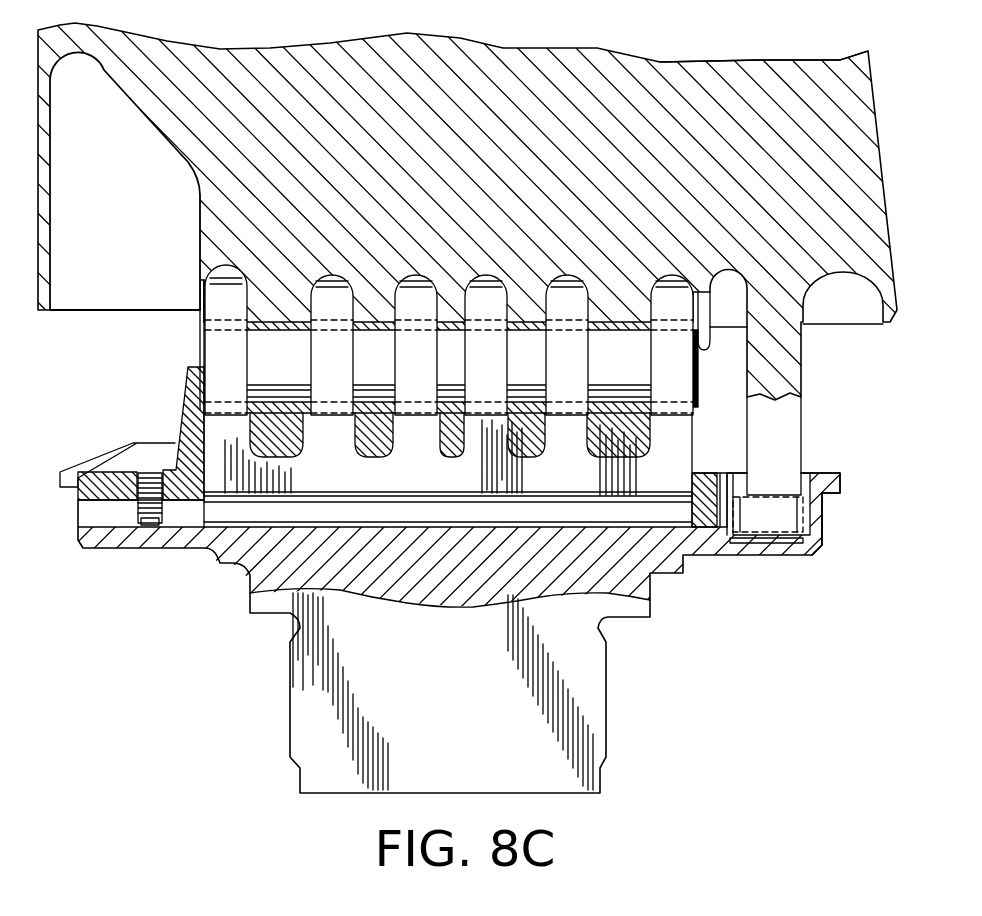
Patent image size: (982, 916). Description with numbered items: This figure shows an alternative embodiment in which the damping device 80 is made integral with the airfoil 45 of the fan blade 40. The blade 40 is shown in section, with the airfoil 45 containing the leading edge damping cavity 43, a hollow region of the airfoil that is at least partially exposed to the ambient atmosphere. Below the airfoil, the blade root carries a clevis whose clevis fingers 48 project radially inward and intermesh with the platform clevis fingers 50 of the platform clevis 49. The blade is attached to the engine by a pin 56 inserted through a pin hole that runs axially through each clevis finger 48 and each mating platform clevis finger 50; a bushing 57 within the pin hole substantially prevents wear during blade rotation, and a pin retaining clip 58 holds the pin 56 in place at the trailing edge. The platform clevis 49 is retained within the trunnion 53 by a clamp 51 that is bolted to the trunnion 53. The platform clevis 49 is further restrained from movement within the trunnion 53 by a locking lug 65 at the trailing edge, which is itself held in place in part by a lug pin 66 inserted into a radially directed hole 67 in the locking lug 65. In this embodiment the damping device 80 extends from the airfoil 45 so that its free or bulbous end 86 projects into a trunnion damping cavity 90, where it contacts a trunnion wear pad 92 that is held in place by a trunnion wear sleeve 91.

The blade 40 is at (572, 31).
The leading edge damping cavity 43 is at (118, 251).
The airfoil section 45 is at (752, 90).
The clevis fingers 48 is at (288, 457).
The platform clevis 49 is at (408, 510).
The platform clevis fingers 50 is at (211, 372).
The clamp 51 is at (690, 476).
The trunnion 53 is at (273, 583).
The pin 56 is at (200, 357).
The bushing 57 is at (653, 420).
The pin retaining clip 58 is at (708, 345).
The locking lug 65 is at (80, 477).
The lug pin 66 is at (147, 524).
The radially directed hole 67 is at (150, 522).
The damping device 80 is at (785, 417).
The free or bulbous end 86 is at (777, 517).
The trunnion damping cavity 90 is at (802, 482).
The trunnion wear sleeve 91 is at (815, 533).
The trunnion wear pad 92 is at (755, 542).